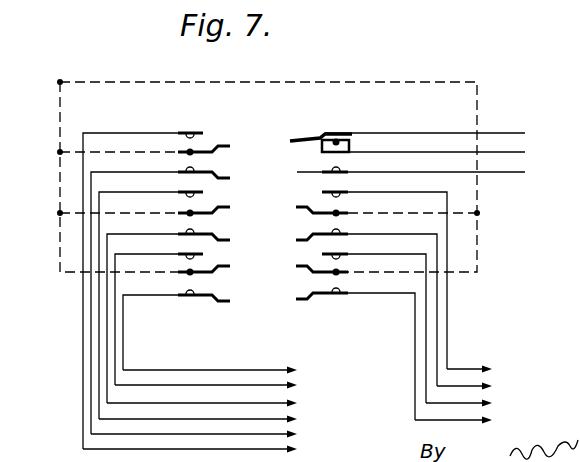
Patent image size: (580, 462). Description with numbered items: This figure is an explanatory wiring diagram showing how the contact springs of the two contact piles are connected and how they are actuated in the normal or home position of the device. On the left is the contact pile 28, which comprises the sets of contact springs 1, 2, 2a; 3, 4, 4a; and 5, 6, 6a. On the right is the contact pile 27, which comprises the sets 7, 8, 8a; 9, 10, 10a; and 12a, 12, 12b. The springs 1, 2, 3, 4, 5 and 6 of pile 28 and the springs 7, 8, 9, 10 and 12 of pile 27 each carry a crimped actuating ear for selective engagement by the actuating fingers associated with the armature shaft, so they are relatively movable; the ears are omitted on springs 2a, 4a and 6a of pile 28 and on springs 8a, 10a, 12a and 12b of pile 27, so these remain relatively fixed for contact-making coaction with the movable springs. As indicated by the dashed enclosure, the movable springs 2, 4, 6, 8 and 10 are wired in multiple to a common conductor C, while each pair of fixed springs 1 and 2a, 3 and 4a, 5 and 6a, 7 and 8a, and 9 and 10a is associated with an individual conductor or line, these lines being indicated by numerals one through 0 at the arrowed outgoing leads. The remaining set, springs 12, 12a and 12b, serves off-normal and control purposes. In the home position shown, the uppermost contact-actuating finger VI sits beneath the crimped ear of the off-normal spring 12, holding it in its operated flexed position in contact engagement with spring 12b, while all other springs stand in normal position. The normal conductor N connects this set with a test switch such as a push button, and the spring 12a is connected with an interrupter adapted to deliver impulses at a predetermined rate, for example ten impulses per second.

The contact spring 1 is at (222, 322).
The contact spring 2 is at (238, 275).
The contact spring 3 is at (242, 234).
The contact spring 4 is at (236, 214).
The contact spring 5 is at (236, 165).
The contact spring 6 is at (236, 139).
The contact spring 2a is at (203, 254).
The contact spring 4a is at (203, 192).
The contact spring 6a is at (197, 131).
The contact spring 7 is at (306, 300).
The contact spring 8 is at (310, 270).
The contact spring 9 is at (300, 240).
The contact spring 10 is at (300, 208).
The individual conductor 0 is at (431, 277).
The contact spring 8a is at (322, 254).
The contact spring 10a is at (322, 191).
The off-normal contact spring 12 is at (311, 136).
The contact spring 12a is at (304, 172).
The contact spring 12b is at (328, 134).
The contact pile 27 is at (343, 97).
The contact pile 28 is at (190, 105).
The common conductor C is at (118, 82).
The normal conductor N is at (514, 136).
The contact-actuating finger VI is at (300, 138).